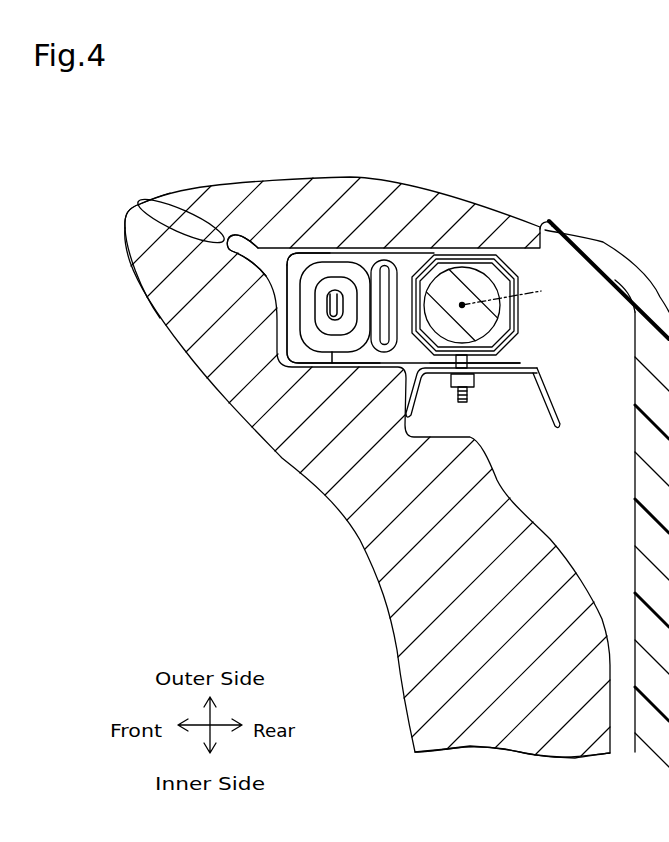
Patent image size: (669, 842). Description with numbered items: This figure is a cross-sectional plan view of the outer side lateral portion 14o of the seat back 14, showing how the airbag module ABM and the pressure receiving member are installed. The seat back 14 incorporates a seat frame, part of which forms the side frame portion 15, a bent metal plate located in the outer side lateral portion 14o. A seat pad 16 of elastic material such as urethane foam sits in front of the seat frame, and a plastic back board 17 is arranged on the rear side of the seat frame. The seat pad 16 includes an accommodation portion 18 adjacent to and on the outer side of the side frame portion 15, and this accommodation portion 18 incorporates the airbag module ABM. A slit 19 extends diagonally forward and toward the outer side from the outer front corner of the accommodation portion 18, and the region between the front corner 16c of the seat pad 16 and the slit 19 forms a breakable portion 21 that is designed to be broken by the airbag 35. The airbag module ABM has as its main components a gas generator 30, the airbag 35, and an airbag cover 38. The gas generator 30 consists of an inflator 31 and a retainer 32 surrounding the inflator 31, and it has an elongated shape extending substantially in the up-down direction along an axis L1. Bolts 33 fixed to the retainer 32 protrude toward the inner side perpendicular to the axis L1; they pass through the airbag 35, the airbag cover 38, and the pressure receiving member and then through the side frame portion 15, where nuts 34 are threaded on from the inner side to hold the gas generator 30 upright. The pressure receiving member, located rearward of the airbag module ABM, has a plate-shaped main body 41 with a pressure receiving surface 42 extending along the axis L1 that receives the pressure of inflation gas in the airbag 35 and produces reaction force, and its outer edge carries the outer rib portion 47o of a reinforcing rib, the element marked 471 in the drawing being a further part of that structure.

The seat back 14 is at (258, 515).
The outer side lateral portion 14o is at (131, 242).
The seat pad 16 is at (516, 752).
The front corner 16c is at (136, 208).
The back board 17 is at (651, 753).
The accommodation portion 18 is at (347, 261).
The slit 19 is at (267, 250).
The breakable portion 21 is at (185, 213).
The gas generator 30 is at (512, 230).
The inflator 31 is at (470, 275).
The retainer 32 is at (438, 278).
The bolts 33 is at (467, 401).
The nuts 34 is at (446, 382).
The airbag 35 is at (330, 363).
The airbag cover 38 is at (287, 332).
The main body 41 is at (519, 316).
The pressure receiving surface 42 is at (513, 341).
The outer rib portion 47o is at (524, 248).
The seal lip 471 is at (497, 364).
The side frame portion 15 is at (557, 409).
The axis L1 is at (516, 290).
The airbag module ABM is at (283, 366).